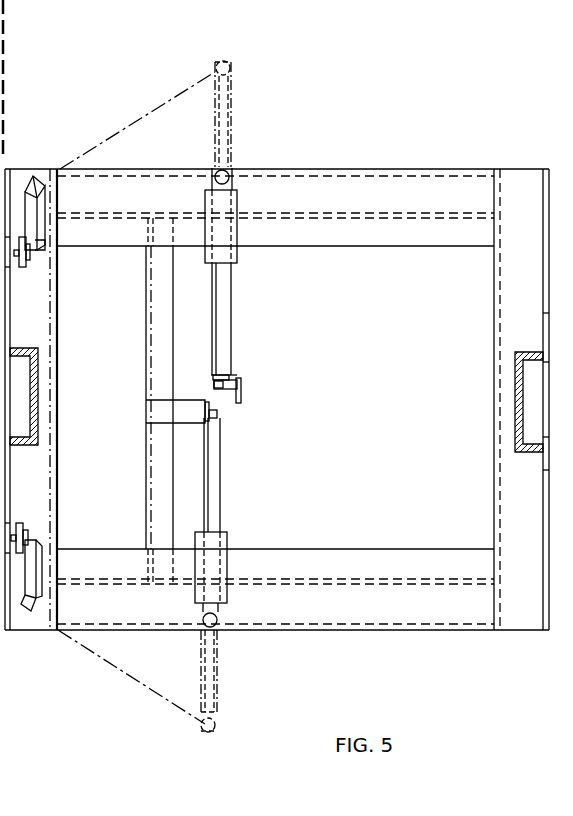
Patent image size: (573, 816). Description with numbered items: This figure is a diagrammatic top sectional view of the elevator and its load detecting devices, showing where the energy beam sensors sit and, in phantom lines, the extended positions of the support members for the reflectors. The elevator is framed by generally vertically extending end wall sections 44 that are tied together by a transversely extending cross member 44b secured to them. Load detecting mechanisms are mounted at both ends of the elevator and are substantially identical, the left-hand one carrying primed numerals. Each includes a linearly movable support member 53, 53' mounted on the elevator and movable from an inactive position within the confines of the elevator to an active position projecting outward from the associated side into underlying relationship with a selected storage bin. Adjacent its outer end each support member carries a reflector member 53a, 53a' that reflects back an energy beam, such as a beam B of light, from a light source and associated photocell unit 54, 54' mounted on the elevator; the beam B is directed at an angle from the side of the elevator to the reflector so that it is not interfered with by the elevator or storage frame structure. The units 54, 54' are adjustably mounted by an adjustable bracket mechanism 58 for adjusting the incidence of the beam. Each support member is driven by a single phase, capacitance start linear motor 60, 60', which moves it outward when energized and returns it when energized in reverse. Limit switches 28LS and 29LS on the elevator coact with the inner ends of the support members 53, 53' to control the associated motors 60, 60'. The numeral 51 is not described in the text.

The end wall sections 44 is at (13, 182).
The cross member 44b is at (447, 175).
The pallet / carriage direction 51 is at (143, 110).
The support member 53 is at (253, 114).
The reflector member 53a is at (258, 118).
The support member 53' is at (243, 671).
The reflector member 53a' is at (208, 678).
The light source and associated photocell unit 54 is at (64, 212).
The light source and associated photocell unit 54' is at (71, 581).
The adjustable bracket mechanism 58 is at (27, 260).
The linear motor 60 is at (242, 285).
The linear motor 60' is at (245, 510).
The limit switch 29LS is at (233, 377).
The limit switch 28LS is at (185, 405).
The beam of light B is at (103, 136).